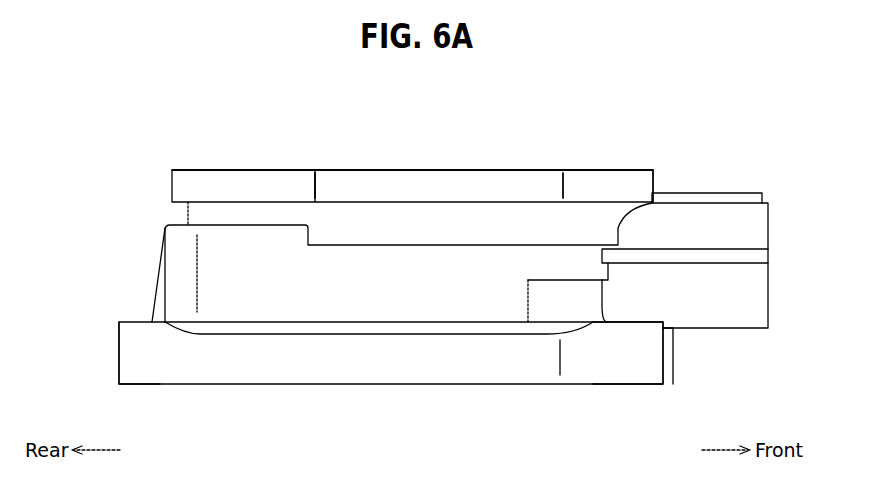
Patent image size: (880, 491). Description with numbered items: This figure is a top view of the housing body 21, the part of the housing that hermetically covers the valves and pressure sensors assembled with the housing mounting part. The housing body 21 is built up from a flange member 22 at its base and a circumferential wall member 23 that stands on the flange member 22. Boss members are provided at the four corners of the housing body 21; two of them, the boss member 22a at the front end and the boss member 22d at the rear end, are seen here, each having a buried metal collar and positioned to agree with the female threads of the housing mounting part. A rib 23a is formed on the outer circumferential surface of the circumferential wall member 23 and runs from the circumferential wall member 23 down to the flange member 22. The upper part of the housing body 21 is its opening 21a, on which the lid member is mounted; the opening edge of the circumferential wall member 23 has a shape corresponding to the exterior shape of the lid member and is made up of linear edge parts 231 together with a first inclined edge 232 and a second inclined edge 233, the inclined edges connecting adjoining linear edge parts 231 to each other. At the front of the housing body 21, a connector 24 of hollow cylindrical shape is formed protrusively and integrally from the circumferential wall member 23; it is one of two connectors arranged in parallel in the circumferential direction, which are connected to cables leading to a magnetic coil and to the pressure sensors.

The housing body 21 is at (114, 193).
The opening 21a is at (388, 162).
The linear edge part 231 is at (472, 180).
The first inclined edge 232 is at (231, 181).
The second inclined edge 233 is at (593, 178).
The connector 24 is at (705, 192).
The circumferential wall member 23 is at (432, 303).
The rib 23a is at (153, 290).
The flange member 22 is at (535, 370).
The boss member 22d is at (138, 367).
The boss member 22a is at (623, 363).